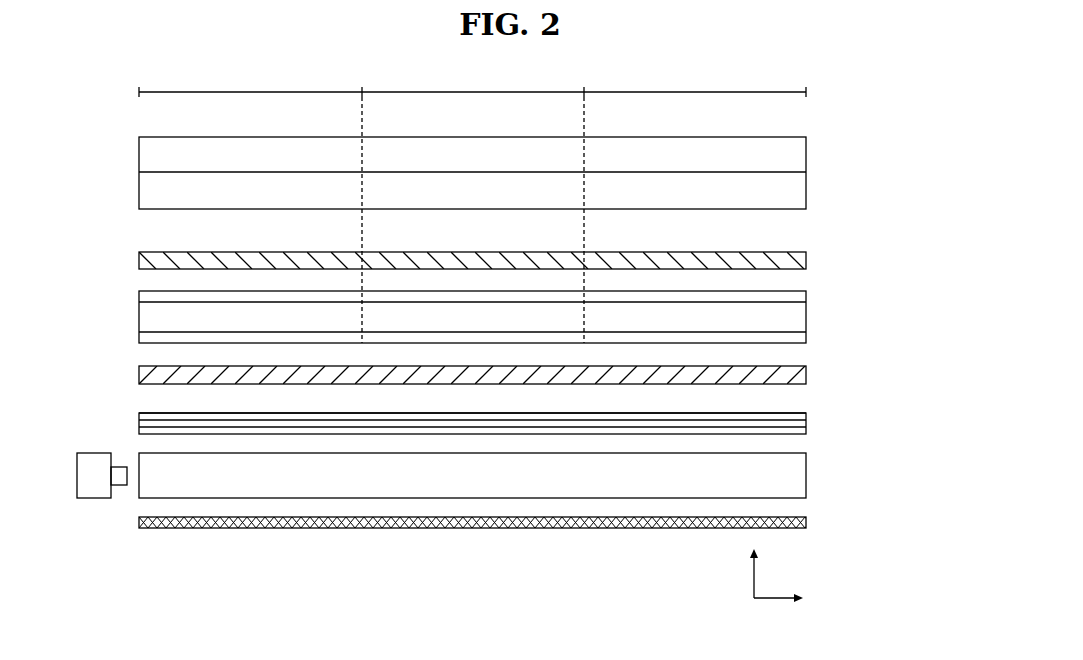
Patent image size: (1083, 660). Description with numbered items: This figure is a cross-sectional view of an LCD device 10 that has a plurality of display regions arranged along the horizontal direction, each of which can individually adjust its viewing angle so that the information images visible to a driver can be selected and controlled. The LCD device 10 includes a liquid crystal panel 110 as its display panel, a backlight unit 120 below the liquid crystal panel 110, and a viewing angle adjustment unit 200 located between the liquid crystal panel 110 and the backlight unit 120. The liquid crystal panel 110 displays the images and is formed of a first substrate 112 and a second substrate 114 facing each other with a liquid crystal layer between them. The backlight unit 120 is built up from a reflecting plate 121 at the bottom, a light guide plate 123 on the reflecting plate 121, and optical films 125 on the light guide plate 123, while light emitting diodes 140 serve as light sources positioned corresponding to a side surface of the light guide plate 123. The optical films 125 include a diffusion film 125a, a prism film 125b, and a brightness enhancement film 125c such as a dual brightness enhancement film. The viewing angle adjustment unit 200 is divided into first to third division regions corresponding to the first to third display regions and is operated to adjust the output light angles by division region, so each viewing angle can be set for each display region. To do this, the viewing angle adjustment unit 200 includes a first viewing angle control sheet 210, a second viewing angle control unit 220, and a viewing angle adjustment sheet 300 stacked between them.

The LCD device 10 is at (524, 344).
The liquid crystal panel 110 is at (531, 173).
The first substrate 112 is at (792, 193).
The second substrate 114 is at (792, 155).
The backlight unit 120 is at (555, 466).
The reflecting plate 121 is at (806, 522).
The light guide plate 123 is at (792, 475).
The optical film 125 is at (540, 428).
The diffusion film 125a is at (806, 430).
The prism film 125b is at (806, 421).
The brightness enhancement film 125c is at (806, 414).
The light emitting diode 140 is at (93, 498).
The viewing angle adjustment unit 200 is at (539, 321).
The first viewing angle control sheet 210 is at (510, 378).
The second viewing angle control unit 220 is at (806, 258).
The viewing angle adjustment sheet 300 is at (806, 316).